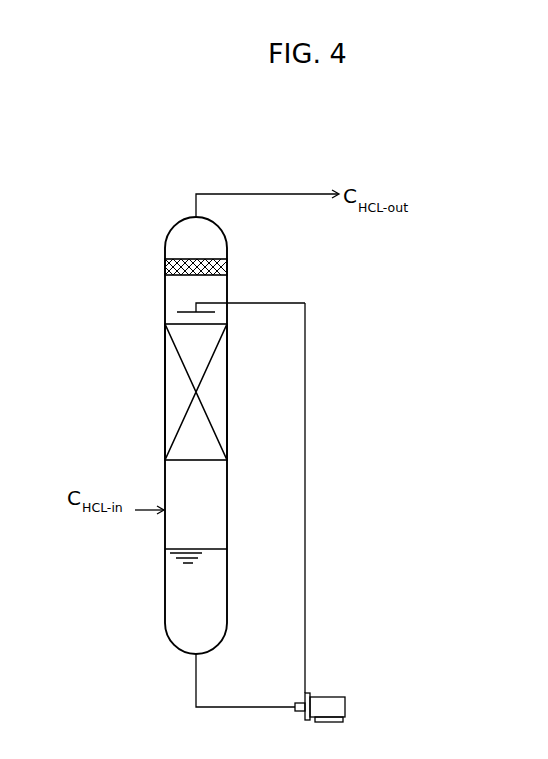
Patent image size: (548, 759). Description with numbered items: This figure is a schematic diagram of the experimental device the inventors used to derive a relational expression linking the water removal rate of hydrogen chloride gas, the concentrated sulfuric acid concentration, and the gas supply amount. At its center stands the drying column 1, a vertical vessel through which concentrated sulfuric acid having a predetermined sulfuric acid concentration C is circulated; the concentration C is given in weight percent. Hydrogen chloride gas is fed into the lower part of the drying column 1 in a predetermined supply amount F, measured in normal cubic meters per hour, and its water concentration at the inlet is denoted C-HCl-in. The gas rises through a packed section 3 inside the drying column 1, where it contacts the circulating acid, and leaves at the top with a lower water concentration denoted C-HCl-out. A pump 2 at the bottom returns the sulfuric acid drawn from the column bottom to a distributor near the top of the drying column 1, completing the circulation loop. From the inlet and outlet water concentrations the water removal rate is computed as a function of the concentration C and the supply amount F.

The drying column 1 is at (228, 251).
The circulation pump 2 is at (345, 707).
The packing 3 is at (220, 404).
The sulfuric acid concentration C is at (177, 641).
The hydrogen chloride gas supply amount F is at (128, 523).